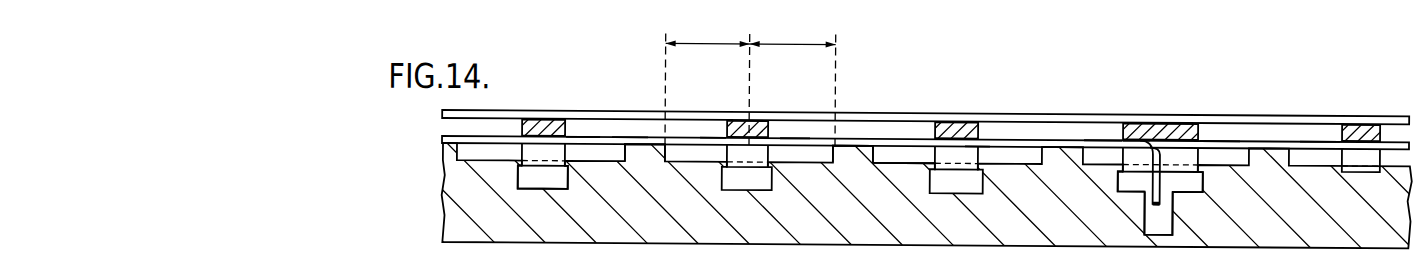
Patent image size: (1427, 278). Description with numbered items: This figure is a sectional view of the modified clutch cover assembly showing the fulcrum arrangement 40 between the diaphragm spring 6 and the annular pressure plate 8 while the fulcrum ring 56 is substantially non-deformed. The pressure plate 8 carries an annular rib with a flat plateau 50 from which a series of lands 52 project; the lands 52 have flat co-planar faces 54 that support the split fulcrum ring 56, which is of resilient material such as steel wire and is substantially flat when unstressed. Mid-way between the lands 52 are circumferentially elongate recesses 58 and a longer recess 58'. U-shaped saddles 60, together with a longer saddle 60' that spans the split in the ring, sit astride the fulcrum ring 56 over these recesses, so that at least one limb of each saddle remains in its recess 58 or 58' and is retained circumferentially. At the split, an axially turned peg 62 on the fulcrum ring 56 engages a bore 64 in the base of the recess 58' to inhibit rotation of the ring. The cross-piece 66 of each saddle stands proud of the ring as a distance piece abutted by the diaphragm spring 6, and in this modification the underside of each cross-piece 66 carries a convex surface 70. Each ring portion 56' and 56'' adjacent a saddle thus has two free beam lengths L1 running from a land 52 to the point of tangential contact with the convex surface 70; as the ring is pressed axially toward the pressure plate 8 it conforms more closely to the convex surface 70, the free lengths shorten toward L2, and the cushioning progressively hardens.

The diaphragm spring 6 is at (684, 103).
The pressure plate 8 is at (517, 250).
The fulcrum arrangement 40 is at (1013, 126).
The flat plateau 50 is at (889, 156).
The lands 52 is at (673, 158).
The flat co-planar faces 54 is at (640, 136).
The fulcrum ring 56 is at (607, 100).
The fulcrum ring portion 56' is at (1038, 102).
The contact pad 56'' is at (1197, 103).
The recesses 58 is at (542, 220).
The recess 58' is at (1137, 224).
The saddles 60 is at (939, 117).
The saddle 60' is at (1156, 111).
The axially turned peg 62 is at (1158, 203).
The bore 64 is at (1167, 226).
The cross-piece 66 is at (546, 128).
The convex surface 70 is at (977, 143).
The free length L1 is at (701, 42).
The shortened free length L2 is at (746, 266).